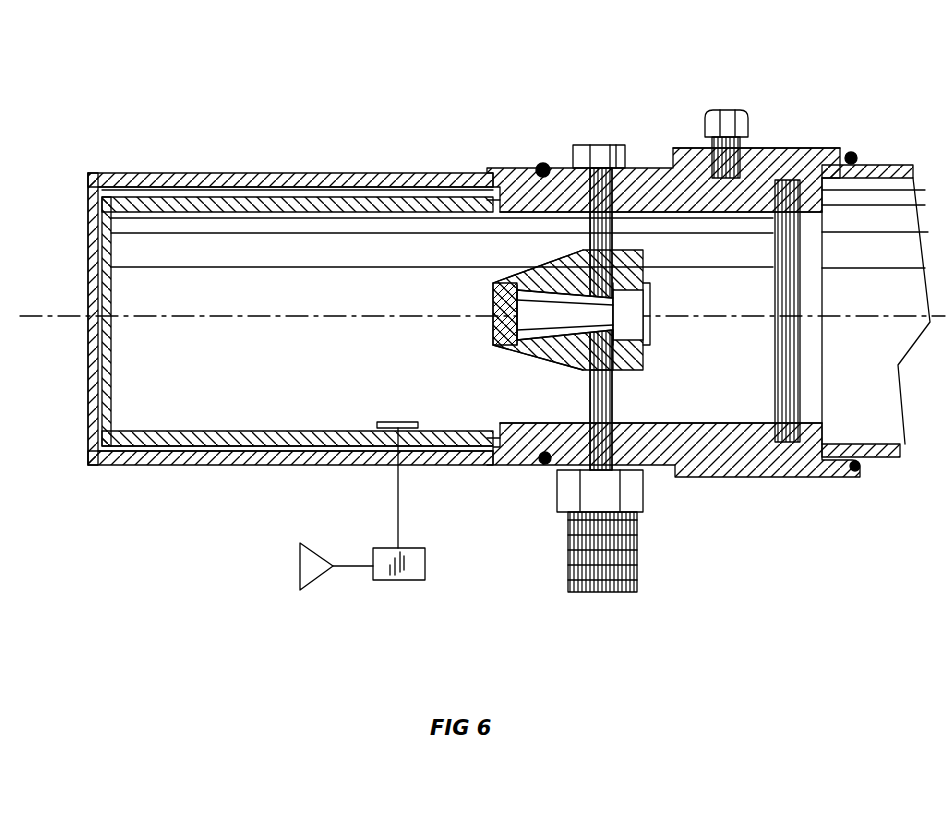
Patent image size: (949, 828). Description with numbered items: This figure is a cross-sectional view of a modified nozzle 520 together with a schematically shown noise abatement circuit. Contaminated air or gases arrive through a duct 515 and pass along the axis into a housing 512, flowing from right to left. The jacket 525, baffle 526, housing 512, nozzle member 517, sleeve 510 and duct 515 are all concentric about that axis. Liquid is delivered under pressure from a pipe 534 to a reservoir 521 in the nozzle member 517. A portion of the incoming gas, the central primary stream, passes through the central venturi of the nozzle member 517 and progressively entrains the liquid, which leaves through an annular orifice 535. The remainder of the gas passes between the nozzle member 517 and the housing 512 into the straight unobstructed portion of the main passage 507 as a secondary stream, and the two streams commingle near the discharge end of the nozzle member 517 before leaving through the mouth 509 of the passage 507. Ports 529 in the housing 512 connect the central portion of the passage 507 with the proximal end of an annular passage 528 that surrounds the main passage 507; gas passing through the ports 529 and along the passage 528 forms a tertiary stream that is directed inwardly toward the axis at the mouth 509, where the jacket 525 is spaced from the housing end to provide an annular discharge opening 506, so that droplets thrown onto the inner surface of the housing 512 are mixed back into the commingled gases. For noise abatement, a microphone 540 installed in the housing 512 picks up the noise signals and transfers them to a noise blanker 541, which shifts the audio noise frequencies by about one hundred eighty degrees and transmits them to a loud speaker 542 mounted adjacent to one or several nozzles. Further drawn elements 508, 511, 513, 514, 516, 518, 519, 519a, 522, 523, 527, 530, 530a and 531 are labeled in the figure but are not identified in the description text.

The annular discharge opening 506 is at (104, 418).
The main passage 507 is at (143, 465).
The coupling housing 508 is at (860, 476).
The mouth 509 is at (105, 386).
The sleeve 510 is at (783, 160).
The downstream pipe bore 511 is at (826, 195).
The housing 512 is at (336, 465).
The clamp bolt 513 is at (728, 110).
The end plate 514 is at (774, 250).
The duct 515 is at (872, 162).
The nut 516 is at (590, 236).
The nozzle member 517 is at (520, 372).
The sensor body upper face 518 is at (520, 272).
The stud 519 is at (626, 252).
The stud lower end 519a is at (645, 372).
The nozzle 520 is at (246, 159).
The reservoir 521 is at (560, 372).
The bore wall 522 is at (493, 335).
The tapered bore 523 is at (493, 320).
The jacket 525 is at (362, 172).
The baffle 526 is at (90, 193).
The coupling shoulder 527 is at (548, 478).
The annular passage 528 is at (236, 465).
The ports 529 is at (536, 172).
The sensor rear face 530 is at (645, 282).
The sensor rear cap 530a is at (645, 262).
The sensor lower rear portion 531 is at (645, 330).
The pipe 534 is at (637, 540).
The annular orifice 535 is at (492, 286).
The microphone 540 is at (385, 420).
The noise blanker 541 is at (430, 566).
The loud speaker 542 is at (300, 578).